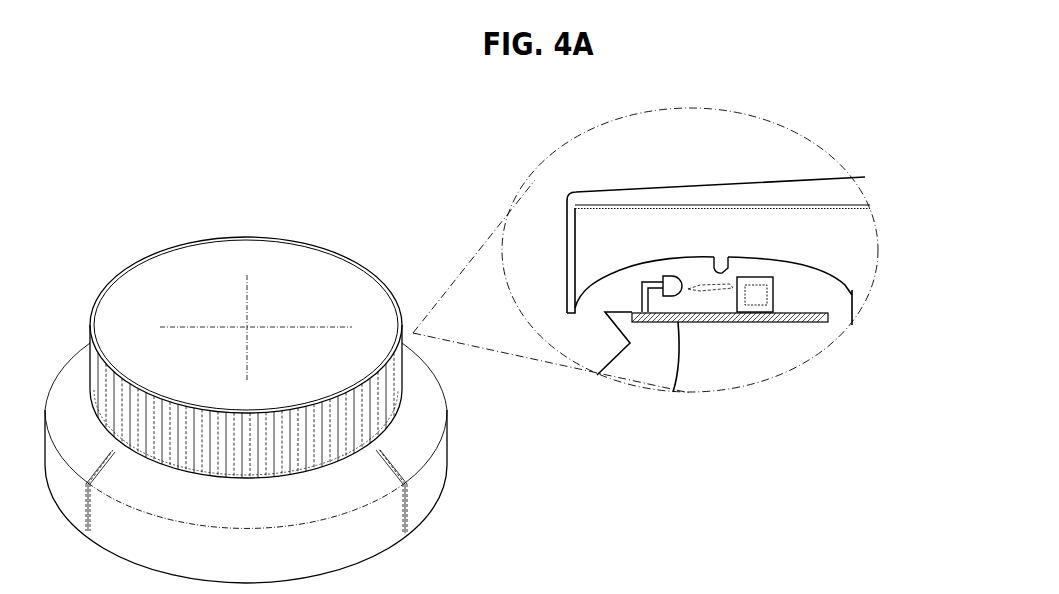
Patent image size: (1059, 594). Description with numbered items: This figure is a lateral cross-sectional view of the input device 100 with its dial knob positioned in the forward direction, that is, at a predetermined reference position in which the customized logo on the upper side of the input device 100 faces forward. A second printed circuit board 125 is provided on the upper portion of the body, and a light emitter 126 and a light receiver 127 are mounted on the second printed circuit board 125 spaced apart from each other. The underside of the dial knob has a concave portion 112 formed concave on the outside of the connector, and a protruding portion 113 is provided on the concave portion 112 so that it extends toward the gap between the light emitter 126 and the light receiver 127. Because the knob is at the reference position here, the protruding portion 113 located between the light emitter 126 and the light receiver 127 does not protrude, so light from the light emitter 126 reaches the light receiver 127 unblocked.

The input device 100 is at (136, 220).
The concave portion 112 is at (648, 262).
The protruding portion 113 is at (731, 262).
The second printed circuit board 125 is at (653, 322).
The light emitter 126 is at (673, 285).
The light receiver 127 is at (754, 312).